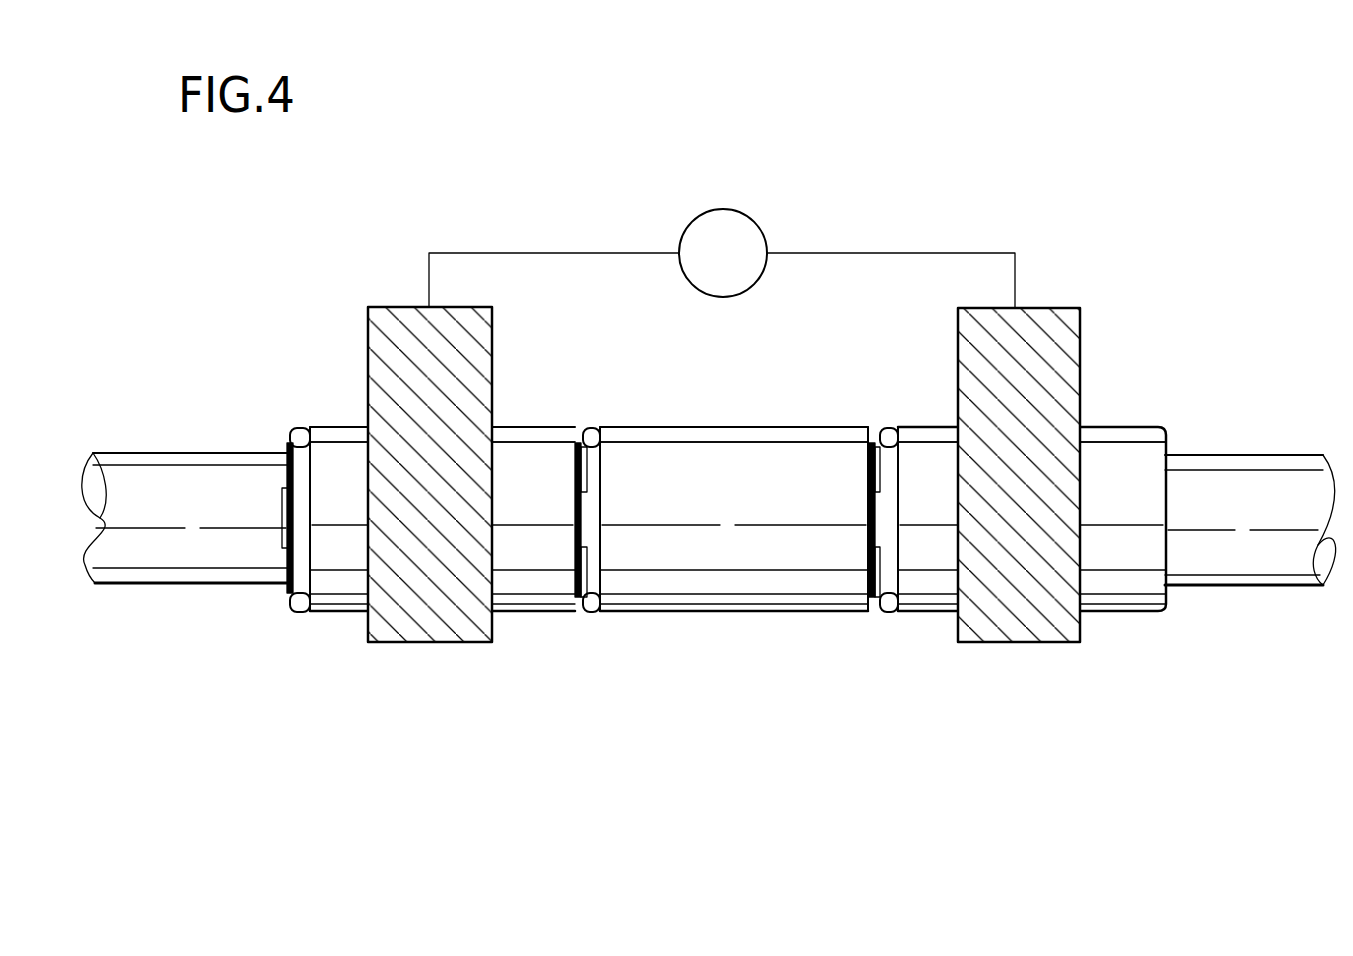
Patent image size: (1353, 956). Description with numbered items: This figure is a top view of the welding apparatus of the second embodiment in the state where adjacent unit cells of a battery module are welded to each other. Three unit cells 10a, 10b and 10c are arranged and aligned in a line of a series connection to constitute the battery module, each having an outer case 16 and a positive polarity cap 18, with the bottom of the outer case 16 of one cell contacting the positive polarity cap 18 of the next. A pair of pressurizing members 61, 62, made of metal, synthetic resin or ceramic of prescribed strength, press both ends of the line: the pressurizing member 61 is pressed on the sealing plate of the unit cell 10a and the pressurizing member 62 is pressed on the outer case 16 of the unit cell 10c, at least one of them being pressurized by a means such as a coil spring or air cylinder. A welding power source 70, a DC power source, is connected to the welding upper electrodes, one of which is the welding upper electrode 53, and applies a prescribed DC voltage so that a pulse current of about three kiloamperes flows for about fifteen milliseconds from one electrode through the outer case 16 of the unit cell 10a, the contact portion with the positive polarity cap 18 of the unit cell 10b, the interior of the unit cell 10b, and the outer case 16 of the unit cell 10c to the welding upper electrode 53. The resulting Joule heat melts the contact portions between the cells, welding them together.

The unit cell 10a is at (333, 621).
The unit cell 10b is at (717, 621).
The unit cell 10c is at (1117, 627).
The outer case 16 is at (538, 437).
The positive polarity cap 18 is at (287, 530).
The welding upper electrode 53 is at (428, 620).
The pressurizing member 61 is at (193, 460).
The pressurizing member 62 is at (1240, 465).
The welding power source 70 is at (723, 209).